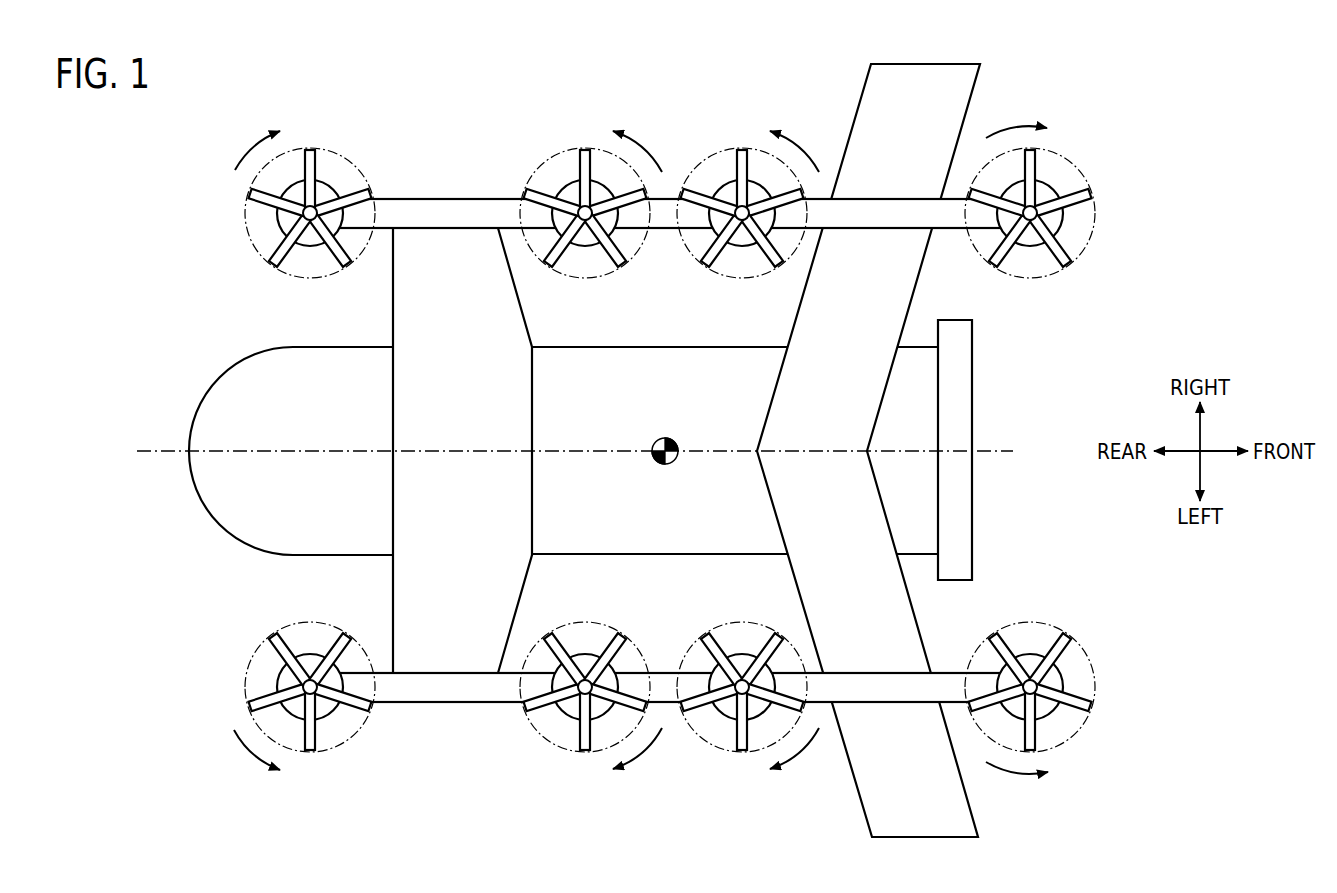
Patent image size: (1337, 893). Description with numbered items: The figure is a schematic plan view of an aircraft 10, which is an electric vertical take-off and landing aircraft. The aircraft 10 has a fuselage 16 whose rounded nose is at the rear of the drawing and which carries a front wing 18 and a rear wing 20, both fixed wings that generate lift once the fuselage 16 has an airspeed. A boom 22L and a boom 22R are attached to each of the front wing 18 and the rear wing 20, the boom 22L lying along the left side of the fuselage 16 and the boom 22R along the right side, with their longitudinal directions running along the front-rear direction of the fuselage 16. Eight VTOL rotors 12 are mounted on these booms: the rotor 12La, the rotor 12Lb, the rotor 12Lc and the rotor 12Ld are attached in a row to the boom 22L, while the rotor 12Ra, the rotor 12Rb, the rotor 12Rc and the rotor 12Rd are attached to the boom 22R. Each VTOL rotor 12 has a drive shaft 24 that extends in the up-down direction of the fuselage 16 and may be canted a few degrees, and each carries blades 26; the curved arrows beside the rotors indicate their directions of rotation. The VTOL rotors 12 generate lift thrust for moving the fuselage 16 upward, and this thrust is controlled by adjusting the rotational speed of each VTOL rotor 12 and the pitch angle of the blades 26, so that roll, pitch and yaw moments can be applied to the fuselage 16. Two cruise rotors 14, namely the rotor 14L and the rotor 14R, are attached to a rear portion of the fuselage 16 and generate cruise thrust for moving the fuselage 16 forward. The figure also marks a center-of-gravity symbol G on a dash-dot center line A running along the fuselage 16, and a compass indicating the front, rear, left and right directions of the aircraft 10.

The aircraft 10 is at (125, 136).
The VTOL rotor 12 is at (716, 456).
The rotor 12Ra is at (342, 152).
The rotor 12Rb is at (550, 160).
The rotor 12Rc is at (707, 160).
The rotor 12Rd is at (1060, 157).
The rotor 12La is at (340, 742).
The rotor 12Lb is at (550, 743).
The rotor 12Lc is at (707, 743).
The rotor 12Ld is at (1060, 745).
The cruise rotor 14 is at (1023, 450).
The rotor 14R is at (955, 380).
The rotor 14L is at (955, 522).
The fuselage 16 is at (192, 420).
The front wing 18 is at (474, 243).
The rear wing 20 is at (873, 86).
The boom 22R is at (436, 208).
The boom 22L is at (428, 683).
The drive shaft 24 is at (310, 220).
The blade 26 is at (305, 158).
The center of gravity G is at (657, 440).
The center axis A is at (567, 452).